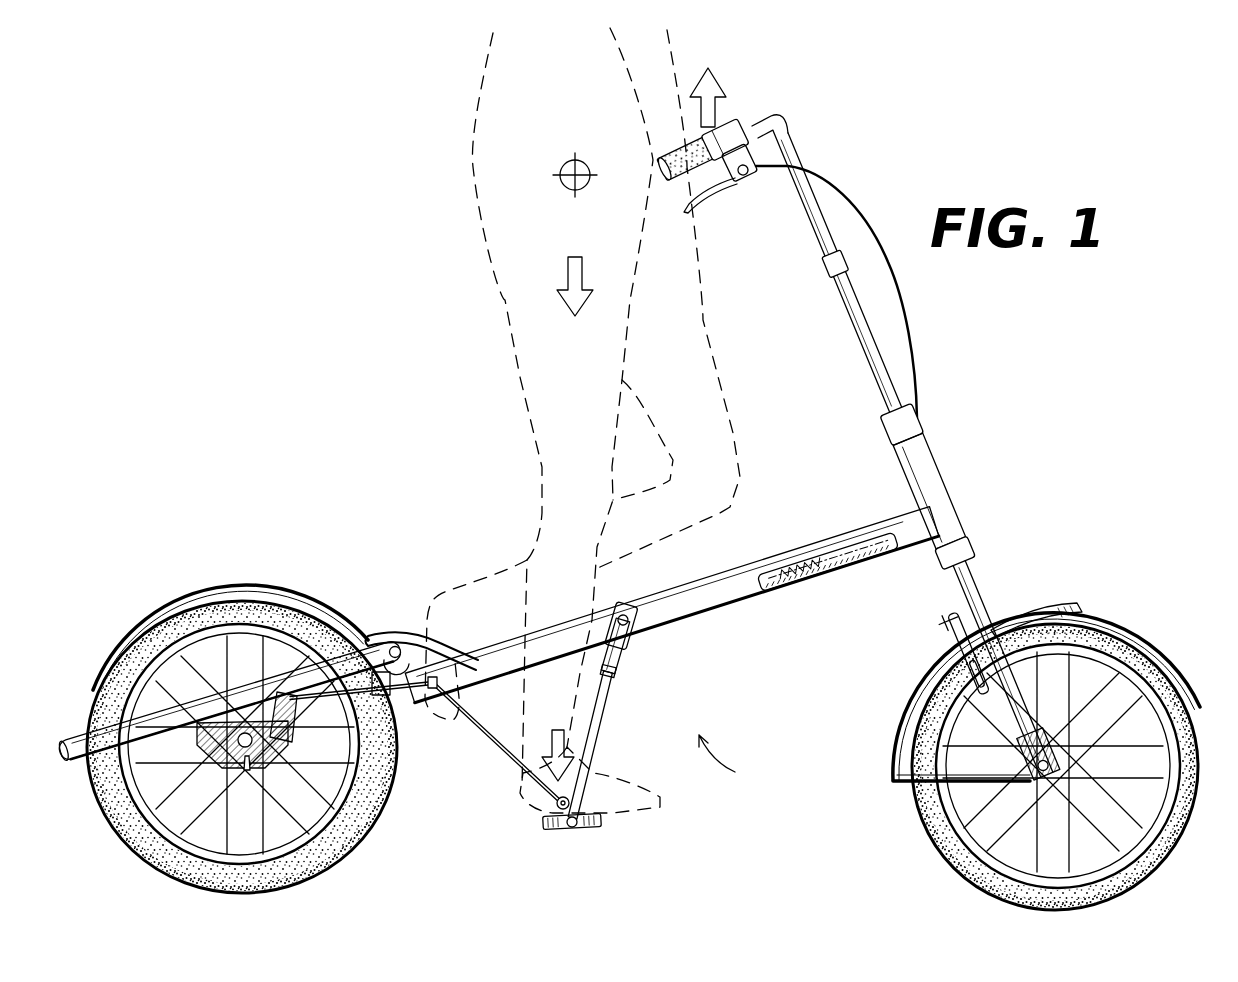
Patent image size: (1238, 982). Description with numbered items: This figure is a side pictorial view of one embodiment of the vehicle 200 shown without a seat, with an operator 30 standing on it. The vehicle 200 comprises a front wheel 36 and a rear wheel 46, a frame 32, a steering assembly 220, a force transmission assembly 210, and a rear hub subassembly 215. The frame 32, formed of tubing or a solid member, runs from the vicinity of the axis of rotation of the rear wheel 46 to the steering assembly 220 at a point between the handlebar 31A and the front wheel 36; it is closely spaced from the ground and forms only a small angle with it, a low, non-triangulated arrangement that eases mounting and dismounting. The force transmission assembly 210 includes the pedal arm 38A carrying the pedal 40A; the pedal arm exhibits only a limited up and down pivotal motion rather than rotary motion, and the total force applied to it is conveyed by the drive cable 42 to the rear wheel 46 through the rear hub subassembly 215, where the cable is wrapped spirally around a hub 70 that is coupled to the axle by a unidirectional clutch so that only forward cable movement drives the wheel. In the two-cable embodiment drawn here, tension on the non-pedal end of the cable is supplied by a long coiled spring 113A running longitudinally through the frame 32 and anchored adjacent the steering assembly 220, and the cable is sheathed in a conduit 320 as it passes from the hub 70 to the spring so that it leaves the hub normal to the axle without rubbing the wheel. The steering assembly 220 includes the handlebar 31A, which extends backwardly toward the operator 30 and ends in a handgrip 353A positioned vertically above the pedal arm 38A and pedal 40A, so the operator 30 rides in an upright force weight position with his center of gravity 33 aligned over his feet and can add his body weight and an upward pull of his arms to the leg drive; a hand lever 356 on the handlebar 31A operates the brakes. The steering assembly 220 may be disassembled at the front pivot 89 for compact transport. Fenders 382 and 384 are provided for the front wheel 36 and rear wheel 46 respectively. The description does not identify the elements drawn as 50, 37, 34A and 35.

The operator 30 is at (513, 383).
The center of gravity 33 is at (560, 168).
The rear wheel 46 is at (190, 600).
The fender 384 is at (265, 587).
The rear frame member 50 is at (63, 743).
The drive cable 42 is at (297, 712).
The rear hub subassembly 215 is at (224, 766).
The hub 70 is at (255, 767).
The conduit 320 is at (388, 697).
The frame 32 is at (827, 542).
The spring 113A is at (815, 570).
The lever pivot 37 is at (620, 606).
The pedal arm 38A is at (623, 684).
The pedal 40A is at (593, 827).
The force transmission assembly 210 is at (483, 788).
The vehicle 200 is at (743, 763).
The handgrip 353A is at (688, 146).
The hand lever 356 is at (697, 201).
The handlebar 31A is at (818, 248).
The steering assembly 220 is at (938, 416).
The front pivot 89 is at (945, 483).
The front fork 34A is at (972, 580).
The front wheel 36 is at (1137, 628).
The front fender 35 is at (894, 745).
The fender 382 is at (1033, 607).